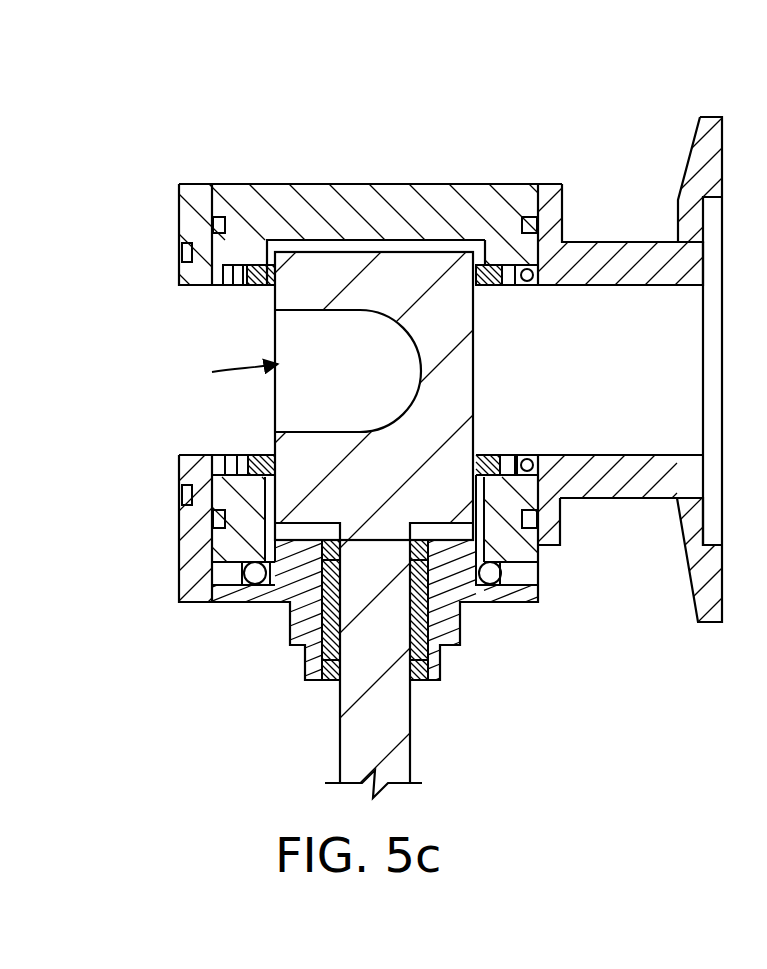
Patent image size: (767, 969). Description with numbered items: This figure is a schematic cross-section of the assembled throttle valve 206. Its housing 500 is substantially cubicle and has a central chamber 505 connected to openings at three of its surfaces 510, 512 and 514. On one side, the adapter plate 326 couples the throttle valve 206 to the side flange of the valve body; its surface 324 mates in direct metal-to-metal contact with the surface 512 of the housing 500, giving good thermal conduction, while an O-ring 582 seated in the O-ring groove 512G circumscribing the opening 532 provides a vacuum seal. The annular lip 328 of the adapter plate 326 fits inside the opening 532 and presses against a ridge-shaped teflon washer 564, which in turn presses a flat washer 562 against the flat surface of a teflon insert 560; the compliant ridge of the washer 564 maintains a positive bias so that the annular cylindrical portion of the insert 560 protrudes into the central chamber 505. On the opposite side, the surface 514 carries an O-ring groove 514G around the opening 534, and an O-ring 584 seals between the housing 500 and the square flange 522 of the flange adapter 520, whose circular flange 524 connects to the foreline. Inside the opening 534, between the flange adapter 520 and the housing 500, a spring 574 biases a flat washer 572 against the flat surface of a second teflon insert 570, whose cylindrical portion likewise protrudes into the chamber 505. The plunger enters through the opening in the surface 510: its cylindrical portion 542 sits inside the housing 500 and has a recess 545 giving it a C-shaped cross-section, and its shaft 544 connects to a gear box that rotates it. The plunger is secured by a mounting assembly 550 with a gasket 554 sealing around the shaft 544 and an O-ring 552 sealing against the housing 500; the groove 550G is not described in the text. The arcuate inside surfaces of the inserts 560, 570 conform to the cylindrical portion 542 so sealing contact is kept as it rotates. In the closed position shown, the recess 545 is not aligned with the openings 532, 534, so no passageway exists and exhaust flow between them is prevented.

The throttle valve 206 is at (190, 59).
The surface of the adapter plate 324 is at (190, 185).
The surface of the housing 512 is at (221, 190).
The throttle valve housing 500 is at (372, 205).
The O-ring groove 512G is at (250, 228).
The O-ring groove 514G is at (522, 222).
The O-ring 582 is at (213, 222).
The annular lip 328 is at (200, 266).
The ridge-shaped teflon washer 564 is at (230, 288).
The flat washer 562 is at (243, 288).
The teflon insert 560 is at (259, 287).
The O-ring 584 is at (528, 215).
The square flange 522 is at (549, 185).
The flange adapter 520 is at (634, 250).
The circular flange 524 is at (712, 117).
The opening 534 is at (672, 409).
The teflon insert 570 is at (490, 286).
The flat washer 572 is at (512, 286).
The spring 574 is at (523, 286).
The central chamber 505 is at (368, 387).
The opening 532 is at (216, 370).
The recess 545 is at (300, 438).
The cylindrical portion 542 is at (407, 513).
The shaft 544 is at (385, 775).
The adapter plate 326 is at (192, 576).
The O-ring 552 is at (280, 575).
The ball bearing 550G is at (243, 583).
The gasket 554 is at (307, 563).
The mounting assembly 550 is at (448, 650).
The surface of the housing 510 is at (520, 590).
The surface of the housing 514 is at (560, 545).